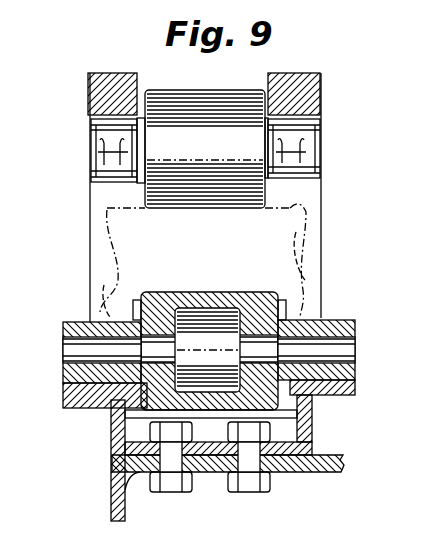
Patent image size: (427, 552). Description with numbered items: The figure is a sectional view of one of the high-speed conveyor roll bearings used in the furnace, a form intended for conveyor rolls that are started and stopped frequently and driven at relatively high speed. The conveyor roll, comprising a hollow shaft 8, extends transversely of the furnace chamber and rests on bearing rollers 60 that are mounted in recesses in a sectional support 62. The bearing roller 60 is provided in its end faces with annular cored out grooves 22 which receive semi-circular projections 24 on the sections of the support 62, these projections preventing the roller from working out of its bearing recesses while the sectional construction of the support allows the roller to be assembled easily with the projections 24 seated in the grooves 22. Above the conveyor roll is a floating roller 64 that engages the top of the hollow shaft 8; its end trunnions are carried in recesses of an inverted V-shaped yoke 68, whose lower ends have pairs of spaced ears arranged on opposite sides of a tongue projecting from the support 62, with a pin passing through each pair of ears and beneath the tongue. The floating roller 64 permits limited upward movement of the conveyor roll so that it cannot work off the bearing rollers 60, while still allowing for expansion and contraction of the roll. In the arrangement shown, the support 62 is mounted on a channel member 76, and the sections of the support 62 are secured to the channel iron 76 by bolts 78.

The hollow shaft 8 is at (318, 213).
The annular cored out grooves 22 is at (132, 318).
The semi-circular projections 24 is at (132, 396).
The bearing rollers 60 is at (222, 294).
The sectional support 62 is at (312, 424).
The floating roller 64 is at (247, 90).
The inverted V-shaped yoke 68 is at (88, 98).
The channel members 76 is at (112, 484).
The bolts 78 is at (246, 490).